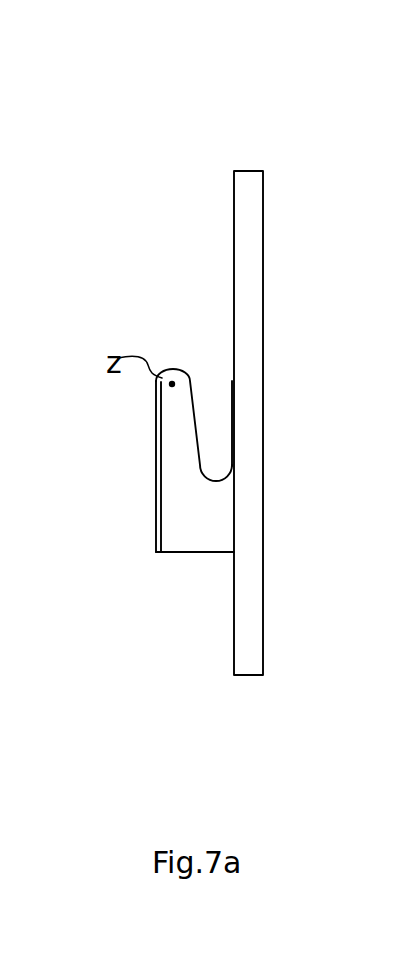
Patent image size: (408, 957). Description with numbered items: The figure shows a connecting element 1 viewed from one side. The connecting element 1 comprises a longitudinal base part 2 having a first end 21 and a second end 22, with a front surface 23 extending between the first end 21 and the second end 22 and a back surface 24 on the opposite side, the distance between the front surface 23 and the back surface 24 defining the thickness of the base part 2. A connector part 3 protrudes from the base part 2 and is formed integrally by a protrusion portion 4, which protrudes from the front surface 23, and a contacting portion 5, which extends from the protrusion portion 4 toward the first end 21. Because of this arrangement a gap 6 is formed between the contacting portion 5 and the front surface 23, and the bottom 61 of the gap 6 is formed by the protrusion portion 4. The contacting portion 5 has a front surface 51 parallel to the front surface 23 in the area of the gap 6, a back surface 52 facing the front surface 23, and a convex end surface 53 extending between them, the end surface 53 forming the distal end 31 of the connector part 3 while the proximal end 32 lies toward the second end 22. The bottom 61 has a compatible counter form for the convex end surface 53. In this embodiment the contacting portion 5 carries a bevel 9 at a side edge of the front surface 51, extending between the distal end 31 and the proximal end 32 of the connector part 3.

The connecting element 1 is at (258, 146).
The base part 2 is at (253, 290).
The first end 21 is at (245, 171).
The second end 22 is at (253, 675).
The front surface 23 is at (234, 381).
The back surface 24 is at (263, 333).
The connector part 3 is at (191, 561).
The distal end 31 is at (178, 370).
The proximal end 32 is at (193, 528).
The protrusion portion 4 is at (155, 547).
The contacting portion 5 is at (173, 430).
The front surface 51 is at (157, 492).
The back surface 52 is at (197, 407).
The end surface 53 is at (160, 373).
The gap 6 is at (208, 414).
The bottom 61 is at (220, 474).
The bevel 9 is at (157, 457).